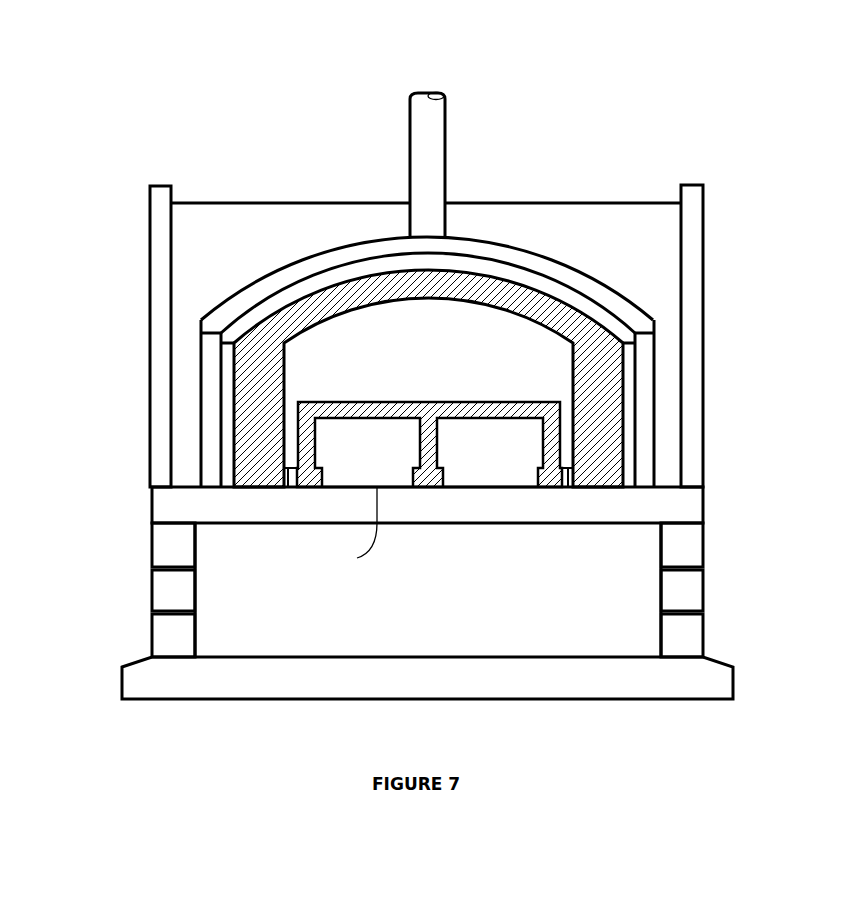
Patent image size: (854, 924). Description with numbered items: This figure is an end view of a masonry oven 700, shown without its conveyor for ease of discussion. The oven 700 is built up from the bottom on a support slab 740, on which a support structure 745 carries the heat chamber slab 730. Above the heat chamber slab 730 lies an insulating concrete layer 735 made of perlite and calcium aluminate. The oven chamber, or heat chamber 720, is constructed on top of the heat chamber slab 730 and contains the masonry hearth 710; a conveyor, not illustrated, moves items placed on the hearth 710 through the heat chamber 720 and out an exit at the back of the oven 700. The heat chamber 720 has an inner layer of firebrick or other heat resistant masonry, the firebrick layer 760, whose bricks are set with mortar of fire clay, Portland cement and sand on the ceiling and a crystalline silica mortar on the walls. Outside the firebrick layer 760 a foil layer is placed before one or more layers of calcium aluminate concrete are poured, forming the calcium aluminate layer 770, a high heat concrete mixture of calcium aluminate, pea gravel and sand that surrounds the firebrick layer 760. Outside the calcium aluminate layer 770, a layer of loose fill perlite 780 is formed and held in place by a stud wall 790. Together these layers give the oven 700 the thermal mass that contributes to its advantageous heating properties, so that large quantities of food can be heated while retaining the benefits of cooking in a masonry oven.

The oven 700 is at (98, 40).
The masonry hearth 710 is at (427, 403).
The heat chamber 720 is at (336, 369).
The heat chamber slab 730 is at (192, 516).
The insulating concrete layer 735 is at (347, 529).
The support slab 740 is at (164, 694).
The support structure 745 is at (191, 555).
The firebrick layer 760 is at (445, 287).
The calcium aluminate layer 770 is at (565, 292).
The loose fill perlite layer 780 is at (219, 234).
The stud wall 790 is at (161, 185).